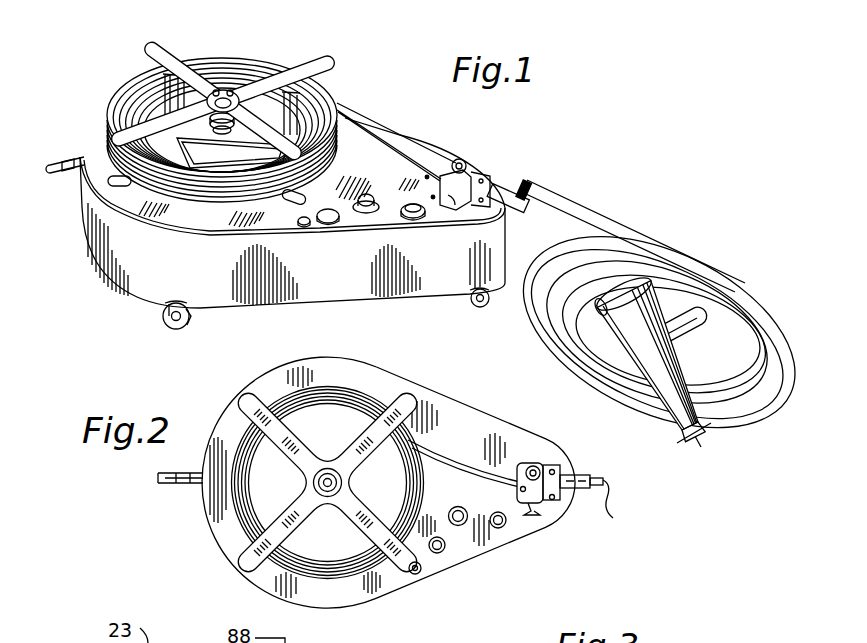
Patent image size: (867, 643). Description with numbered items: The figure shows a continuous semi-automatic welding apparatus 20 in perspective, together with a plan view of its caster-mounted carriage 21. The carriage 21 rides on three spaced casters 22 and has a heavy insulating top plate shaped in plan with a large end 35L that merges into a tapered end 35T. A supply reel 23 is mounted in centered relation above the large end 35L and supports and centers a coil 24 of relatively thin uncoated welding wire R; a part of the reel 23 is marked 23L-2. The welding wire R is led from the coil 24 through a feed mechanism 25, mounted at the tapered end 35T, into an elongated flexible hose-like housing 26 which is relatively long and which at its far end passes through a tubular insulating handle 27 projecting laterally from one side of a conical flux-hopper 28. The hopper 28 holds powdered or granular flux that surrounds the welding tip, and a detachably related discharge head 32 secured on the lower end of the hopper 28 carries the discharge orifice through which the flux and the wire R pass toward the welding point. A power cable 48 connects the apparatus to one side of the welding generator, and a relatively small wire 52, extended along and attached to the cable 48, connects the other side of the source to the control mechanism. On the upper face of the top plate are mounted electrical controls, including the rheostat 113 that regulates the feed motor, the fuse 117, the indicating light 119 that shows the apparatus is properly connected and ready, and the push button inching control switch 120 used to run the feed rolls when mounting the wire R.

In FIG. 1, the continuous semi-automatic welding apparatus 20 is at (512, 161).
In FIG. 1, the caster-mounted carriage 21 is at (259, 283).
In FIG. 1, the casters 22 is at (160, 318).
In FIG. 1, the supply reel 23 is at (306, 66).
In FIG. 2, the supply reel 23 is at (283, 441).
In FIG. 1, the reel support post 23L-2 is at (163, 85).
In FIG. 1, the coil of welding wire 24 is at (218, 62).
In FIG. 2, the coil of welding wire 24 is at (293, 561).
In FIG. 1, the feed mechanism 25 is at (458, 161).
In FIG. 2, the feed mechanism 25 is at (528, 462).
In FIG. 1, the flexible hose-like housing 26 is at (704, 252).
In FIG. 2, the flexible hose-like housing 26 is at (602, 486).
In FIG. 1, the tubular insulating handle 27 is at (521, 191).
In FIG. 2, the tubular insulating handle 27 is at (581, 490).
In FIG. 1, the conical flux-hopper 28 is at (634, 296).
In FIG. 1, the discharge head 32 is at (712, 438).
In FIG. 2, the large end of top plate 35L is at (214, 531).
In FIG. 2, the tapered end of top plate 35T is at (437, 400).
In FIG. 1, the power cable 48 is at (68, 168).
In FIG. 2, the power cable 48 is at (183, 484).
In FIG. 1, the wire 52 is at (58, 153).
In FIG. 2, the wire 52 is at (158, 474).
In FIG. 1, the rheostat 113 is at (366, 197).
In FIG. 2, the rheostat 113 is at (458, 506).
In FIG. 1, the fuse 117 is at (306, 230).
In FIG. 2, the fuse 117 is at (419, 577).
In FIG. 1, the indicating light 119 is at (333, 226).
In FIG. 2, the indicating light 119 is at (442, 553).
In FIG. 1, the inching control switch 120 is at (417, 222).
In FIG. 2, the inching control switch 120 is at (503, 530).
In FIG. 1, the welding wire R is at (396, 135).
In FIG. 2, the welding wire R is at (424, 456).